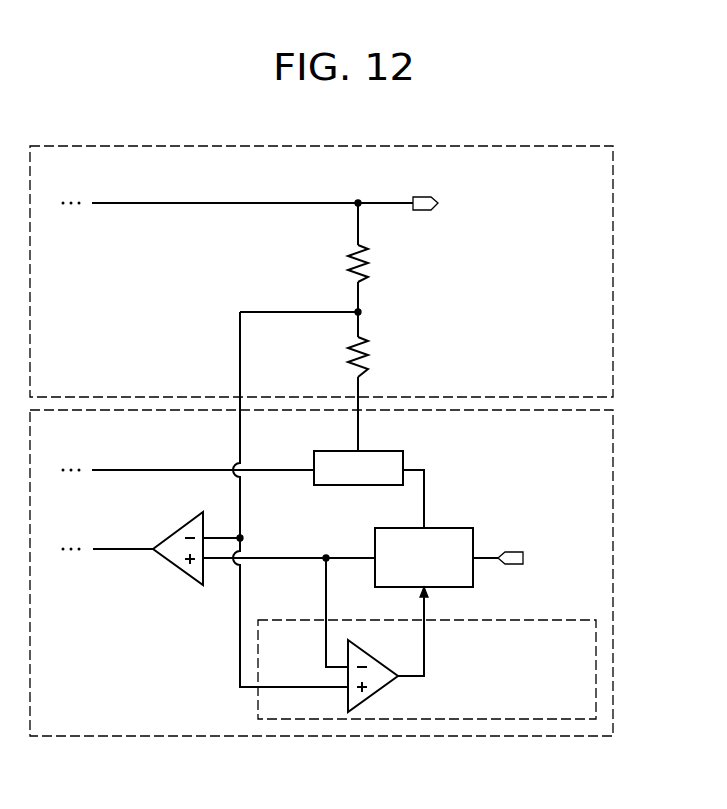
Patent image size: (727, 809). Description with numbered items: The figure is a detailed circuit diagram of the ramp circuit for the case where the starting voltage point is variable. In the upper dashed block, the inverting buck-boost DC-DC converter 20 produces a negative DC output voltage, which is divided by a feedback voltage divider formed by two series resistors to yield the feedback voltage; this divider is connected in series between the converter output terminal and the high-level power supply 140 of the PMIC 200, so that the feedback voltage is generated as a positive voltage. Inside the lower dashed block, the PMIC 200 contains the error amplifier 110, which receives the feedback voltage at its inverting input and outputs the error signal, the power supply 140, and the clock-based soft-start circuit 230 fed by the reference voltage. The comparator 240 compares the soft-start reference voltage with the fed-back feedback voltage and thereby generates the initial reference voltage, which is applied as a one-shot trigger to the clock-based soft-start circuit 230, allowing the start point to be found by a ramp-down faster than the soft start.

The inverting buck-boost DC-DC converter 20 is at (97, 186).
The PMIC 200 is at (108, 447).
The power supply 140 is at (403, 458).
The clock-based soft-start circuit 230 is at (462, 528).
The error amplifier 110 is at (196, 582).
The comparator 240 is at (258, 704).